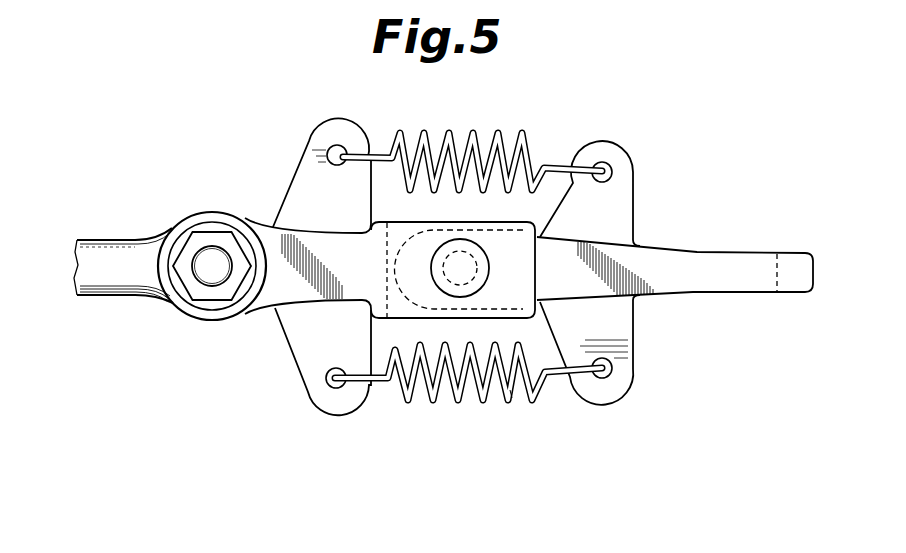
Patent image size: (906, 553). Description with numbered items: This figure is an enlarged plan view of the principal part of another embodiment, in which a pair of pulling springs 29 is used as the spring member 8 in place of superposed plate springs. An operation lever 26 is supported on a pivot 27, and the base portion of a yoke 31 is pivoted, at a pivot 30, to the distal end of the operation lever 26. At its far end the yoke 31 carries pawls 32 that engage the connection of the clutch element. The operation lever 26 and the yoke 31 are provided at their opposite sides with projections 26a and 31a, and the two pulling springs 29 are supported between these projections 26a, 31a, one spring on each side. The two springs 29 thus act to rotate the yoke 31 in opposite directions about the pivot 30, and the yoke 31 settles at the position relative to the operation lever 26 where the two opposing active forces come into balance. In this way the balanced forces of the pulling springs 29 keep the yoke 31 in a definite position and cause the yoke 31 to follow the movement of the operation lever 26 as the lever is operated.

The operation lever 26 is at (118, 241).
The pivot 27 is at (213, 280).
The projections 26a is at (316, 157).
The pulling springs 29 is at (500, 137).
The pivot 30 is at (480, 271).
The yoke 31 is at (720, 260).
The projections 31a is at (627, 179).
The pawls 32 is at (792, 281).
The spring member 8 is at (518, 398).